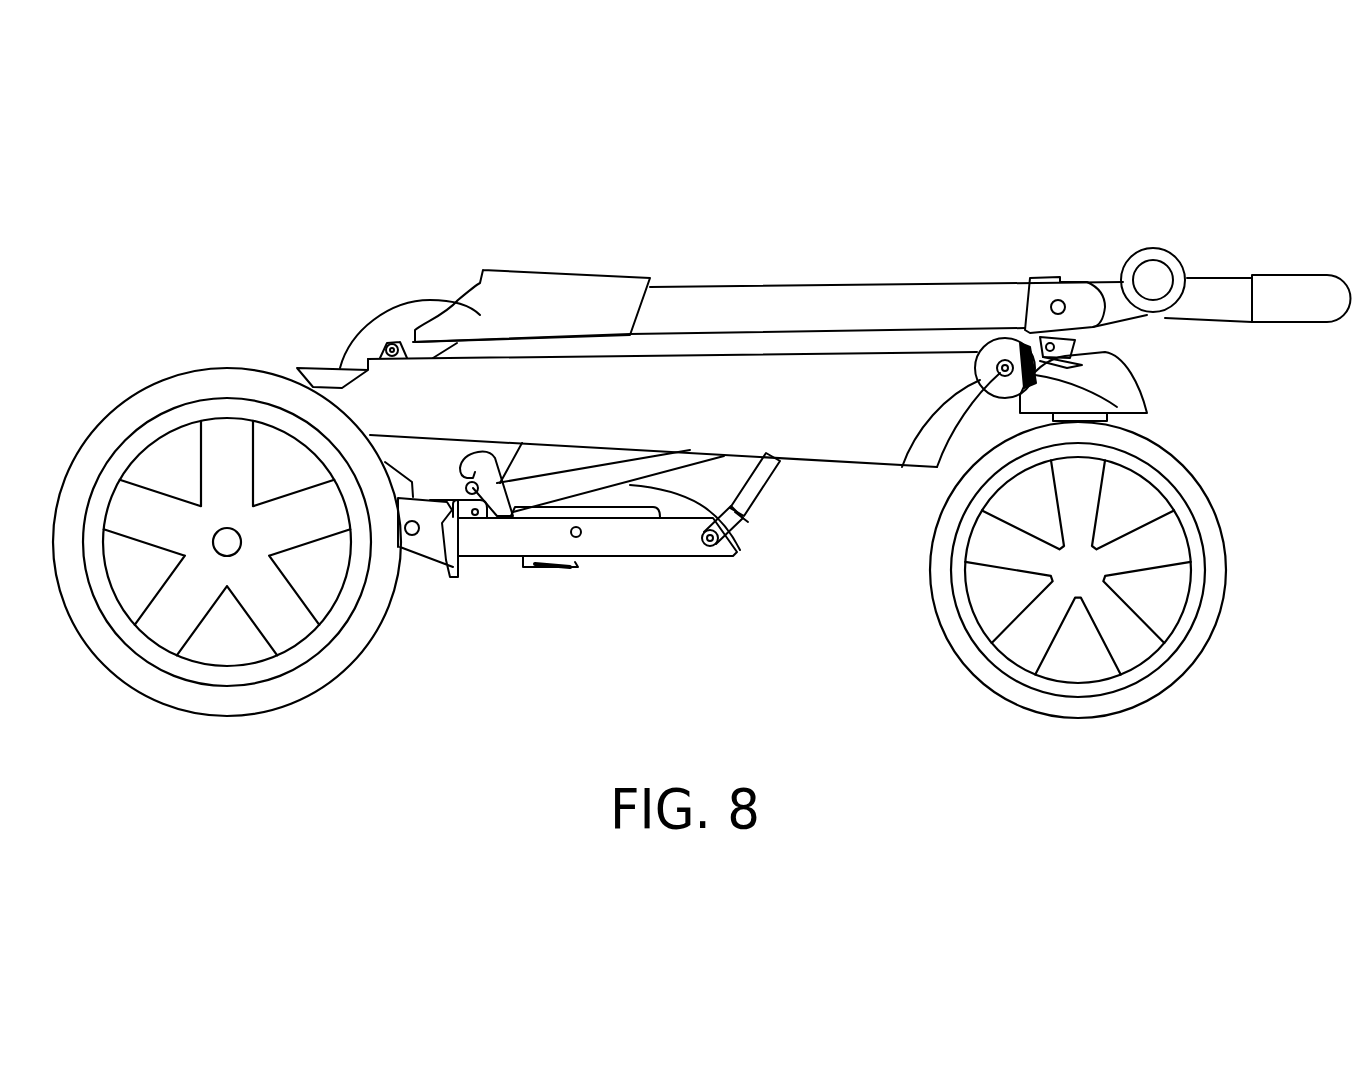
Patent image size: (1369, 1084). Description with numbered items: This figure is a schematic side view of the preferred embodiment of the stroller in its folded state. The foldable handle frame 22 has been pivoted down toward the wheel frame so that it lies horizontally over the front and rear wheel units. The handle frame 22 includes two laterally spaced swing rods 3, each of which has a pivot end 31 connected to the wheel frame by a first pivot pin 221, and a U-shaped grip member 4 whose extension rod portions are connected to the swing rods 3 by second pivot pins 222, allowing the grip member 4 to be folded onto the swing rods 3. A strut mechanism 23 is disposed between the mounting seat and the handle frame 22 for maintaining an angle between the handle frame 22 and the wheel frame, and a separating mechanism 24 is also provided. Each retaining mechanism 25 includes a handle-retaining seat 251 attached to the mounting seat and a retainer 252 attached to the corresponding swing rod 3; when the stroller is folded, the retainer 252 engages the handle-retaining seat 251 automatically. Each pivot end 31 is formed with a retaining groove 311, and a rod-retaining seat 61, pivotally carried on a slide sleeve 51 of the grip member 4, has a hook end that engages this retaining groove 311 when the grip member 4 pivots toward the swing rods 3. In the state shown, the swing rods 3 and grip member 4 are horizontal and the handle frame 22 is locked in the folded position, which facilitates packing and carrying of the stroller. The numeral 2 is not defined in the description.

The frame 2 is at (946, 248).
The foldable handle frame 22 is at (880, 266).
The second pivot pin 222 is at (388, 347).
The retaining mechanism 25 is at (458, 448).
The handle-retaining seat 251 is at (480, 520).
The retainer 252 is at (460, 565).
The strut mechanism 23 is at (670, 518).
The separating mechanism 24 is at (760, 480).
The swing rod 3 is at (777, 433).
The first pivot pin 221 is at (900, 466).
The pivot end 31 is at (996, 353).
The retaining groove 311 is at (1020, 397).
The slide sleeve 51 is at (1077, 295).
The U-shaped grip member 4 is at (1200, 275).
The rod-retaining seat 61 is at (1148, 404).